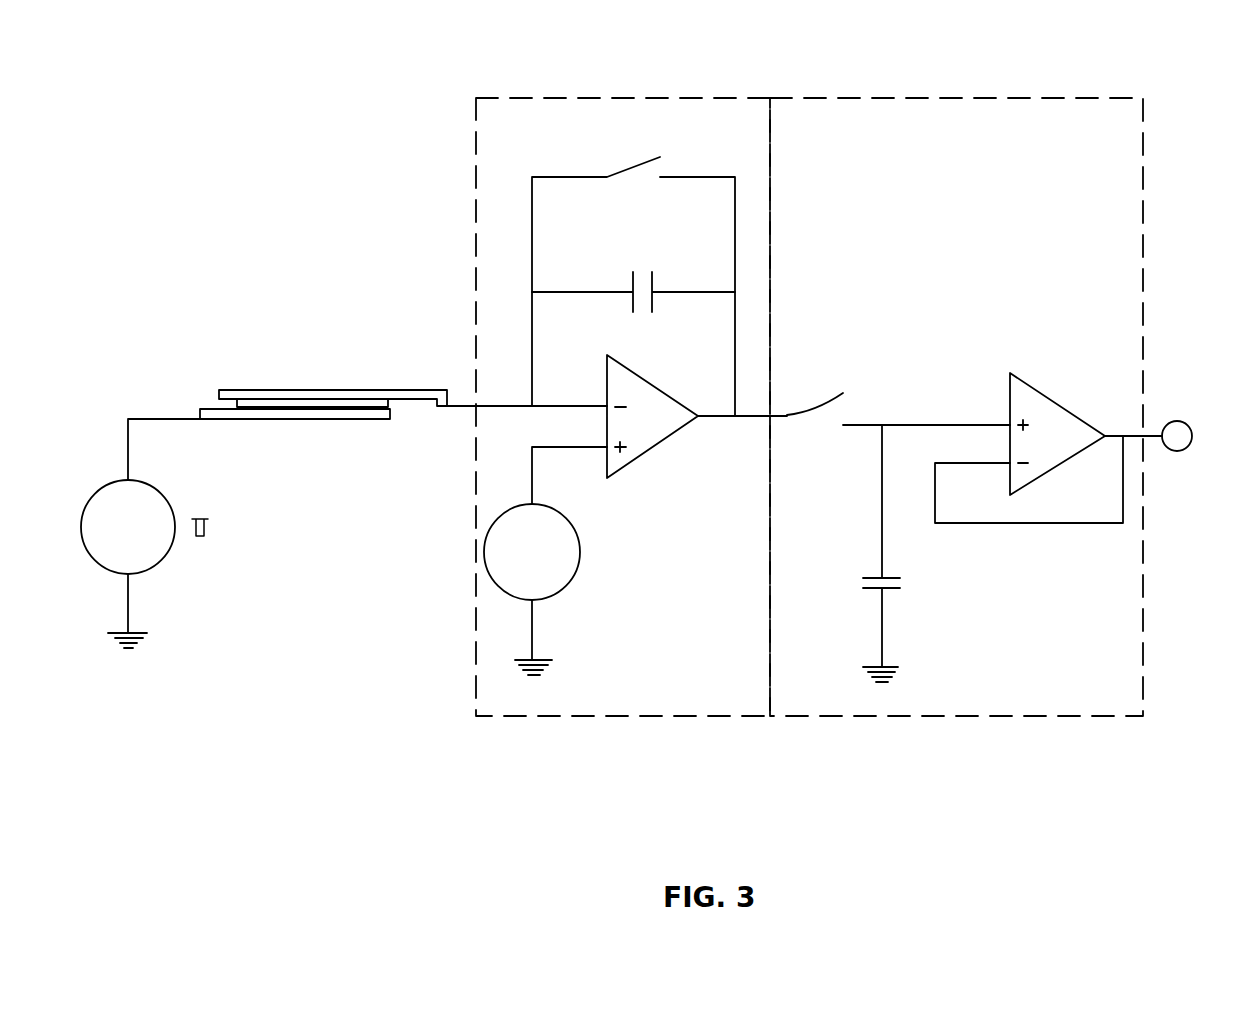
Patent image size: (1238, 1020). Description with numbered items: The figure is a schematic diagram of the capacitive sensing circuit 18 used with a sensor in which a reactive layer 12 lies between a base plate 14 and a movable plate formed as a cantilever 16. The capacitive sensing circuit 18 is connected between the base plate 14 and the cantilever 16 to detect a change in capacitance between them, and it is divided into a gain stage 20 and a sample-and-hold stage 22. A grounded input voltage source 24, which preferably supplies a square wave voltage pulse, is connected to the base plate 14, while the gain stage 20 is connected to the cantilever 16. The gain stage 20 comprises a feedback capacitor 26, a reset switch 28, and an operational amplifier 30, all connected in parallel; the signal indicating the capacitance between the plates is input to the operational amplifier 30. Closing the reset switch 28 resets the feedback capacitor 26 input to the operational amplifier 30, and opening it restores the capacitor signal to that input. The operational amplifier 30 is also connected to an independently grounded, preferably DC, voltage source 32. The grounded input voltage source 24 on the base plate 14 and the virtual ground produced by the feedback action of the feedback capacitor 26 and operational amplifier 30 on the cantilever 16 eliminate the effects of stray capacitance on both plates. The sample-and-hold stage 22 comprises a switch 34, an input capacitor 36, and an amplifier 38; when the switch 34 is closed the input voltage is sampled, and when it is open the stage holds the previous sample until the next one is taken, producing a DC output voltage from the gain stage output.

The reactive layer 12 is at (233, 402).
The base plate 14 is at (333, 419).
The cantilever 16 is at (252, 390).
The capacitive sensing circuit 18 is at (363, 105).
The gain stage 20 is at (548, 98).
The sample-and-hold stage 22 is at (827, 99).
The input voltage source 24 is at (167, 502).
The feedback capacitor 26 is at (633, 283).
The reset switch 28 is at (617, 172).
The operational amplifier 30 is at (660, 447).
The voltage source 32 is at (577, 573).
The switch 34 is at (822, 402).
The input capacitor 36 is at (890, 590).
The amplifier 38 is at (1028, 383).